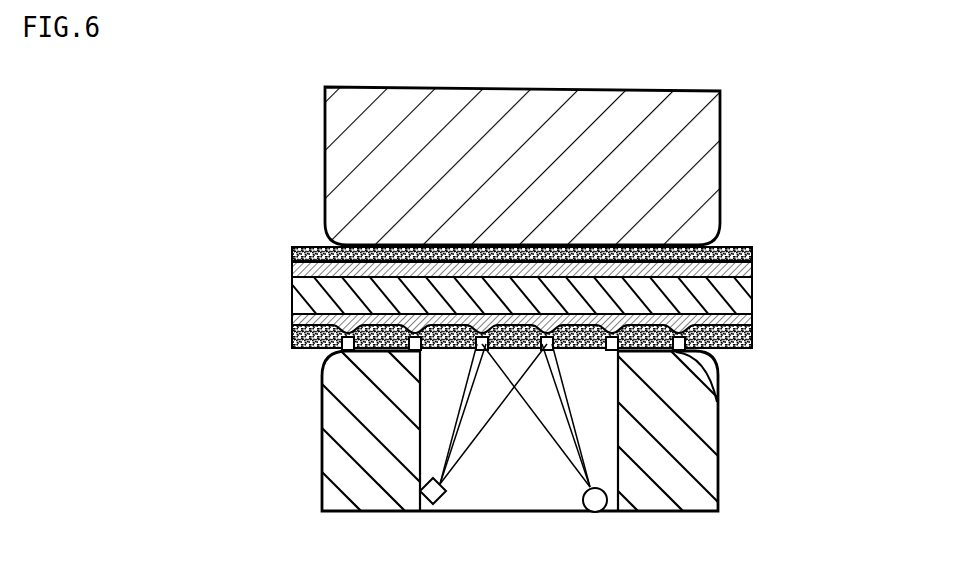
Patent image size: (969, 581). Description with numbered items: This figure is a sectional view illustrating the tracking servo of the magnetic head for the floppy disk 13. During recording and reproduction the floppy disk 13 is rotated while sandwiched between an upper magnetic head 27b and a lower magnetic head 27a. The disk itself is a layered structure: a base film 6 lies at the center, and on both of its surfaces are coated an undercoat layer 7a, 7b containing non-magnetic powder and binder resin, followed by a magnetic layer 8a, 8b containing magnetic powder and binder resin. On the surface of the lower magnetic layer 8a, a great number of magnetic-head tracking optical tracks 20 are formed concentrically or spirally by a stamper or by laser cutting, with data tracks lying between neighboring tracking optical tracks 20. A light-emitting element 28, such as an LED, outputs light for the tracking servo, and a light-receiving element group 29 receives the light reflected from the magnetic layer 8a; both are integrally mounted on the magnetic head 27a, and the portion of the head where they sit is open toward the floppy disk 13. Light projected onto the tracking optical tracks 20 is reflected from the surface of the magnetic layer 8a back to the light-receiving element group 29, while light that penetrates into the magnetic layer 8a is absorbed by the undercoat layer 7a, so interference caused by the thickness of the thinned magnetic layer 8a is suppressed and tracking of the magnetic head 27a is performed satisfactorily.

The magnetic head 27b is at (708, 116).
The magnetic head 27a is at (330, 463).
The floppy disk 13 is at (245, 240).
The magnetic layer 8b is at (292, 250).
The undercoat layer 7b is at (753, 272).
The base film 6 is at (296, 297).
The undercoat layer 7a is at (753, 330).
The magnetic layer 8a is at (292, 338).
The magnetic-head tracking optical track 20 is at (719, 418).
The light-receiving element group 29 is at (430, 504).
The light-emitting element 28 is at (597, 512).